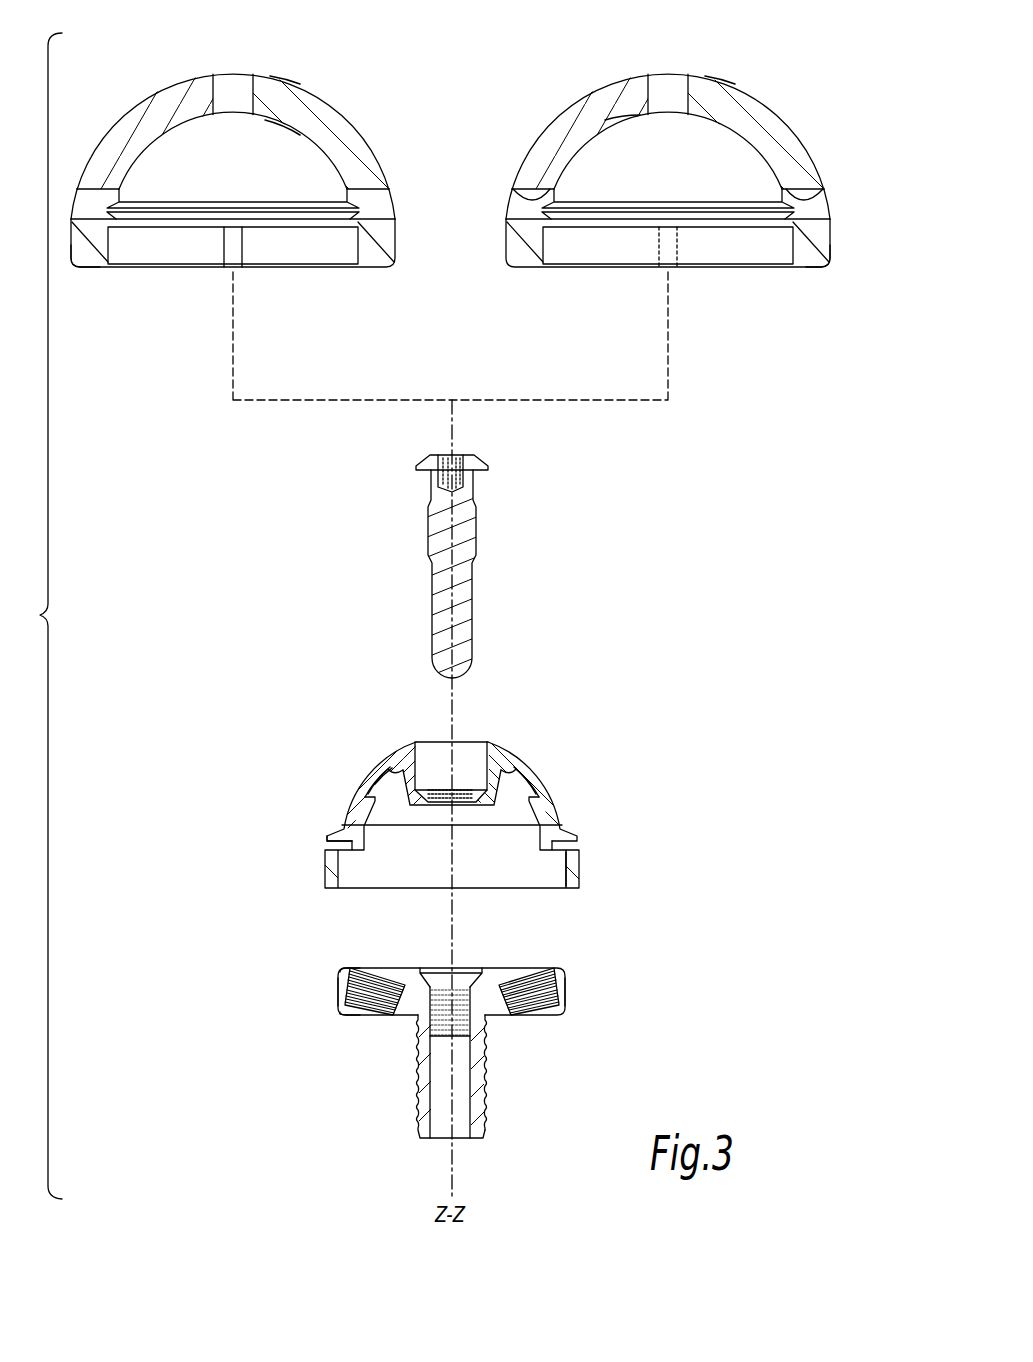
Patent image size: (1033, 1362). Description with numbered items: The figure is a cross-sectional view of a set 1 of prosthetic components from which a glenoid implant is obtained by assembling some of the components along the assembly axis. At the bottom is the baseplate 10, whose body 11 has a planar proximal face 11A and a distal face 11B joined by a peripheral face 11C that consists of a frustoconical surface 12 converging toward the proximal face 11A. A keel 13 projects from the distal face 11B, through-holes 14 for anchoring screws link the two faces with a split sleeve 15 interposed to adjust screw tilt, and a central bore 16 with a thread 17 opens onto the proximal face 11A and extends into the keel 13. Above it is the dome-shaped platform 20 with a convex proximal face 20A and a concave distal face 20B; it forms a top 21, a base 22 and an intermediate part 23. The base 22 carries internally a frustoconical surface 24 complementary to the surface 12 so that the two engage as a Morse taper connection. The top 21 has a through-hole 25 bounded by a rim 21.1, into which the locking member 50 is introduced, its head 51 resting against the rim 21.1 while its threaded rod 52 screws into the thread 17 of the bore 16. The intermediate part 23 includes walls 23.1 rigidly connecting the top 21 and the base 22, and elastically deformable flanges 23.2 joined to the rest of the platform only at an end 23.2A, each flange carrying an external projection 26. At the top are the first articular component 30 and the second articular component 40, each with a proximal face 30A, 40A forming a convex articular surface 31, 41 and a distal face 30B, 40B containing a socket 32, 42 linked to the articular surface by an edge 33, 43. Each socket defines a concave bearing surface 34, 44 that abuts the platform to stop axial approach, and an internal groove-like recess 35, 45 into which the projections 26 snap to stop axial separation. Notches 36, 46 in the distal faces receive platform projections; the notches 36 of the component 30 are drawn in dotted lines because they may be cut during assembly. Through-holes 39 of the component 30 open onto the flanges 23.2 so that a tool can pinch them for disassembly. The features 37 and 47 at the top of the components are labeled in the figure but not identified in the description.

The set of prosthetic components 1 is at (38, 616).
The baseplate 10 is at (422, 1025).
The body 11 is at (446, 1006).
The proximal face 11A is at (343, 963).
The distal face 11B is at (340, 1020).
The peripheral face 11C is at (334, 986).
The frustoconical surface 12 is at (578, 1002).
The keel 13 is at (453, 1025).
The through-holes 14 is at (400, 963).
The split sleeve 15 is at (382, 1016).
The central bore 16 is at (467, 962).
The thread 17 is at (461, 1020).
The platform 20 is at (453, 808).
The proximal face 20A is at (465, 762).
The distal face 20B is at (482, 858).
The top 21 is at (486, 783).
The rim 21.1 is at (482, 815).
The base 22 is at (576, 876).
The intermediate part 23 is at (482, 830).
The wall 23.1 is at (562, 836).
The flange 23.2 is at (348, 800).
The end of flange 23.2A is at (399, 738).
The frustoconical surface 24 is at (558, 874).
The through-hole 25 is at (462, 776).
The projection 26 is at (326, 830).
The first articular component 30 is at (654, 169).
The proximal face 30A is at (654, 109).
The distal face 30B is at (668, 245).
The convex articular surface 31 is at (708, 80).
The socket 32 is at (588, 152).
The edge 33 is at (812, 272).
The concave bearing surface 34 is at (626, 122).
The recess 35 is at (770, 214).
The notch 36 is at (684, 248).
The top plug 37 is at (668, 90).
The through-hole 39 is at (522, 200).
The second articular component 40 is at (245, 179).
The proximal face 40A is at (240, 123).
The distal face 40B is at (245, 244).
The convex articular surface 41 is at (284, 82).
The socket 42 is at (316, 154).
The edge 43 is at (92, 270).
The concave bearing surface 44 is at (292, 132).
The recess 45 is at (166, 214).
The notch 46 is at (233, 272).
The top plug 47 is at (246, 88).
The locking member 50 is at (423, 567).
The head 51 is at (490, 458).
The threaded rod 52 is at (478, 522).